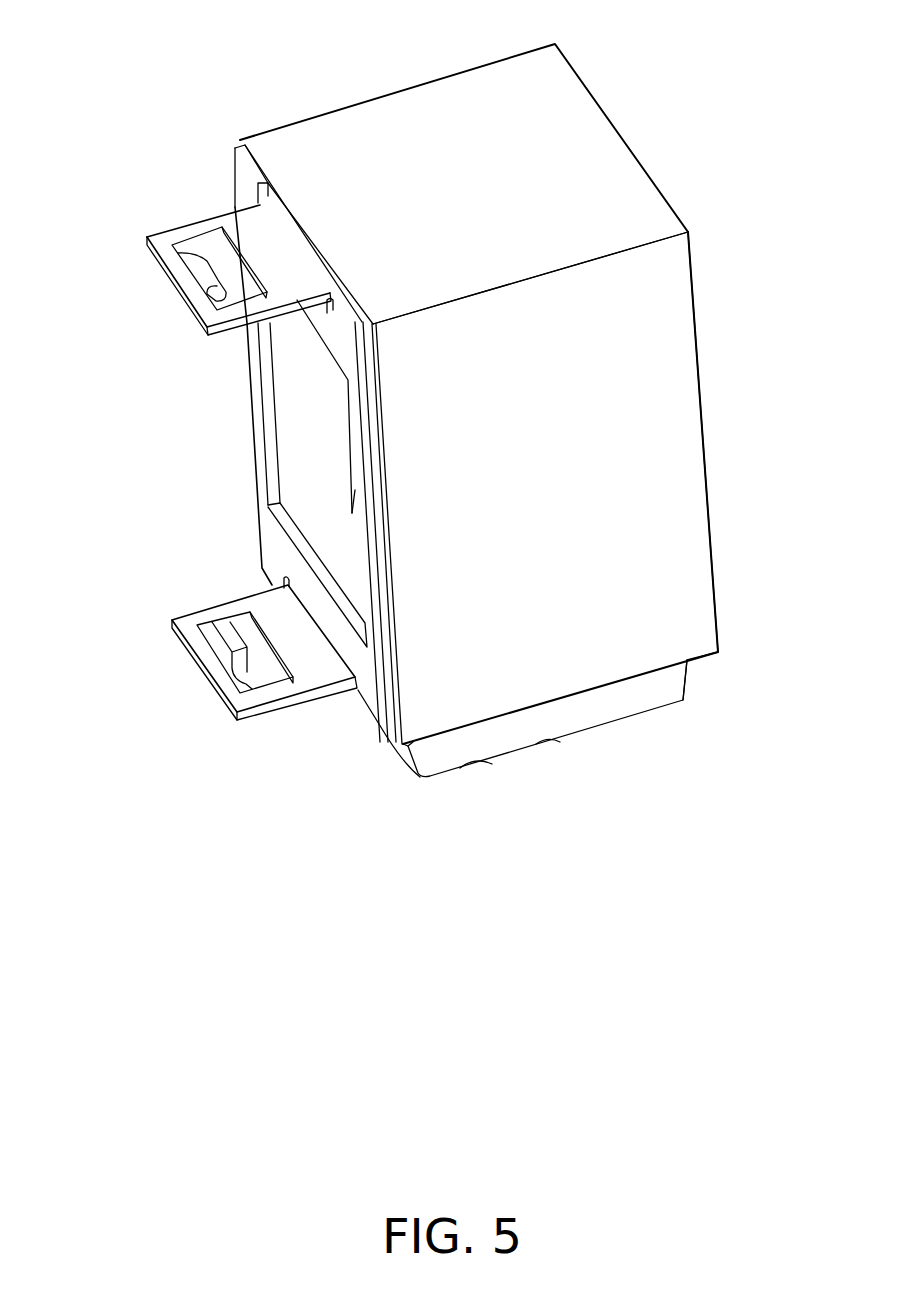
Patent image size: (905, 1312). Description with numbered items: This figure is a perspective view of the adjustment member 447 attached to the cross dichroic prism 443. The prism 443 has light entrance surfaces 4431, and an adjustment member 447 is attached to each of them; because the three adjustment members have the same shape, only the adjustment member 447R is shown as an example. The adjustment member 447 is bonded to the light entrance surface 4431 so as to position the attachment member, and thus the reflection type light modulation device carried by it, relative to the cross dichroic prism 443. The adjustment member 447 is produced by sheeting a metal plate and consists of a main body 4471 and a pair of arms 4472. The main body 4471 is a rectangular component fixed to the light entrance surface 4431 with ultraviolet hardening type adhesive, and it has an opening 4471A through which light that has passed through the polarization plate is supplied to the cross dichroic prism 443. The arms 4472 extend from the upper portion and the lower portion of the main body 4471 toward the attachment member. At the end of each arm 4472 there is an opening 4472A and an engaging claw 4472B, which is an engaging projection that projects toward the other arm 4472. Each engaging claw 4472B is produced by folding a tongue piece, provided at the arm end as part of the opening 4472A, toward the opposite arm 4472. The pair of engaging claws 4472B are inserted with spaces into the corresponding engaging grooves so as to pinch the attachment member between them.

The cross dichroic prism 443 is at (430, 103).
The light entrance surface 4431 is at (366, 326).
The adjustment member 447R is at (256, 148).
The adjustment member 447 is at (262, 138).
The main body 4471 is at (236, 172).
The opening 4471A is at (272, 447).
The arm 4472 is at (186, 237).
The opening 4472A is at (170, 247).
The engaging claw 4472B is at (212, 298).